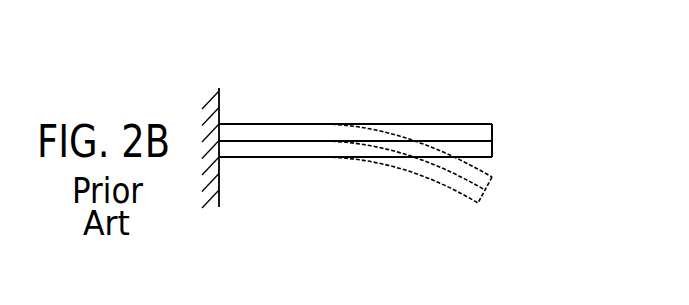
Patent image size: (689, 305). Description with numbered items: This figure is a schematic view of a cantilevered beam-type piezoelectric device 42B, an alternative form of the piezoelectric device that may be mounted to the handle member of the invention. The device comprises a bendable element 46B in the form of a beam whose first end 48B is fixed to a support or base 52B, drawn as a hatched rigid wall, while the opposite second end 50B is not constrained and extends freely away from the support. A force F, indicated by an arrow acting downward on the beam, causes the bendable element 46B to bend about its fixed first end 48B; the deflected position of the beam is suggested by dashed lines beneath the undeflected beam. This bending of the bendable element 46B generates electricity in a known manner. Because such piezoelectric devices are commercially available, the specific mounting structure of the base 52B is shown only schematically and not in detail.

The beam-type piezoelectric device 42B is at (475, 124).
The bendable element 46B is at (452, 124).
The first end 48B is at (232, 124).
The free end of beam 50B is at (492, 130).
The support or base 52B is at (219, 190).
The force F is at (416, 122).